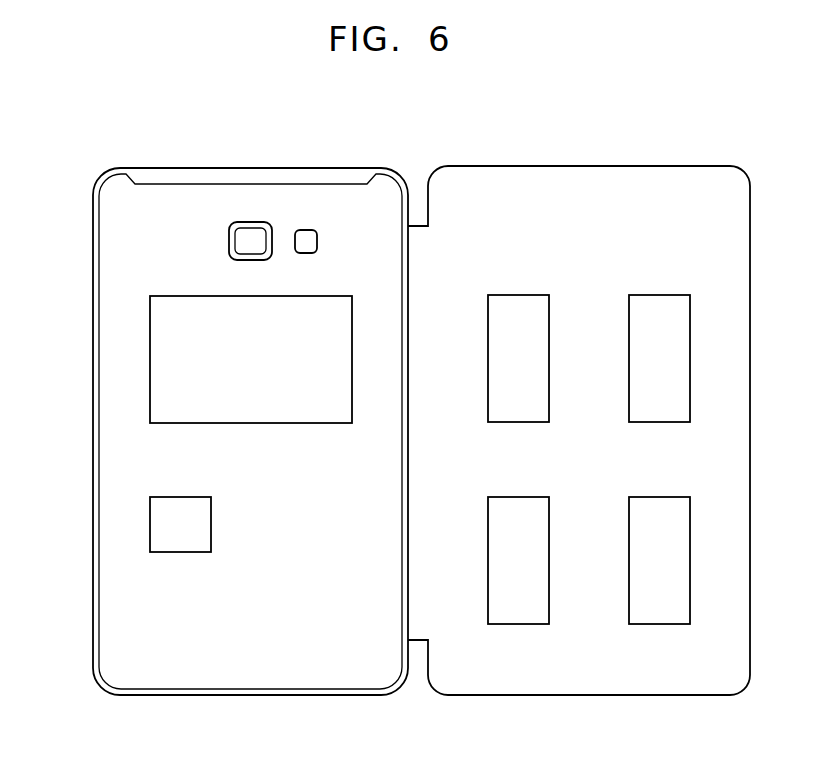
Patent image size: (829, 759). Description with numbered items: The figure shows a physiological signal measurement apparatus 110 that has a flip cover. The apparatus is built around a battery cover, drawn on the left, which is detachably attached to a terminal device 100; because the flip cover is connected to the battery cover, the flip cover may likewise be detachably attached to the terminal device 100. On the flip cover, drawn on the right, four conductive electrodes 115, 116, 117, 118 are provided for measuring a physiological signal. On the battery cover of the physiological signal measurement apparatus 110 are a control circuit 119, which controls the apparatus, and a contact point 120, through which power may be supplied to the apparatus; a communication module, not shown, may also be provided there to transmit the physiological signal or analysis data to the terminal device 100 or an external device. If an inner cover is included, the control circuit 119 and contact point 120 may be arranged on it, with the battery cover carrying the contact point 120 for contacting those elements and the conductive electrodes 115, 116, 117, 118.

The terminal device 100 is at (692, 131).
The physiological signal measurement apparatus 110 is at (120, 245).
The conductive electrode 115 is at (513, 295).
The conductive electrode 116 is at (661, 295).
The conductive electrode 117 is at (518, 624).
The conductive electrode 118 is at (653, 624).
The control circuit 119 is at (150, 350).
The contact point 120 is at (150, 520).